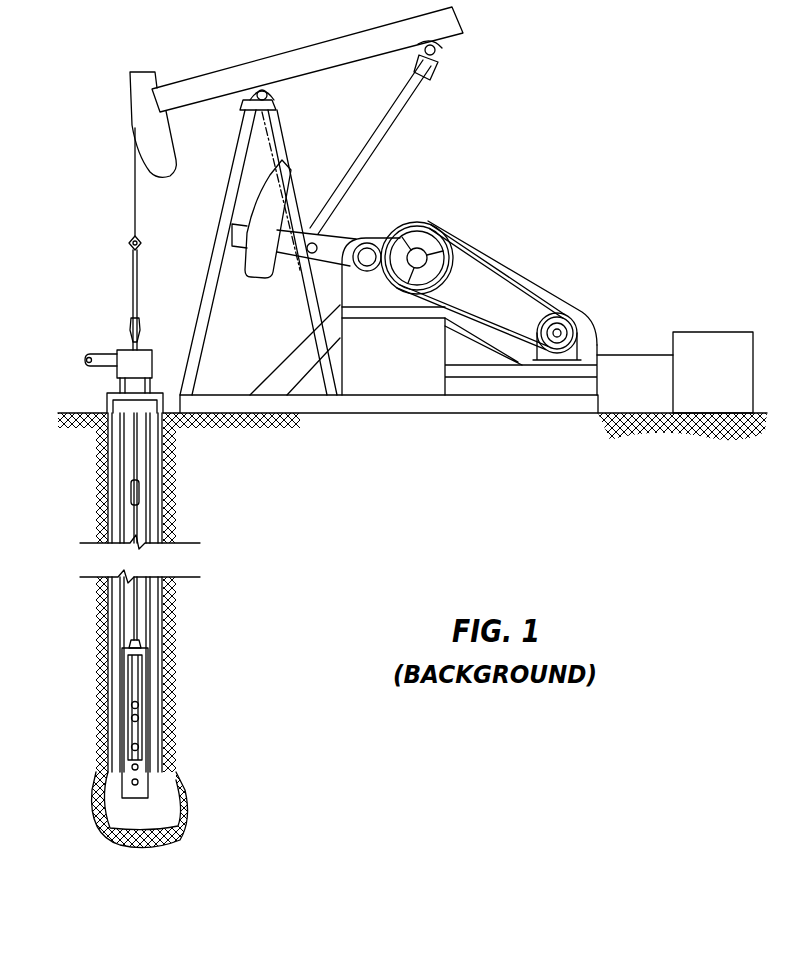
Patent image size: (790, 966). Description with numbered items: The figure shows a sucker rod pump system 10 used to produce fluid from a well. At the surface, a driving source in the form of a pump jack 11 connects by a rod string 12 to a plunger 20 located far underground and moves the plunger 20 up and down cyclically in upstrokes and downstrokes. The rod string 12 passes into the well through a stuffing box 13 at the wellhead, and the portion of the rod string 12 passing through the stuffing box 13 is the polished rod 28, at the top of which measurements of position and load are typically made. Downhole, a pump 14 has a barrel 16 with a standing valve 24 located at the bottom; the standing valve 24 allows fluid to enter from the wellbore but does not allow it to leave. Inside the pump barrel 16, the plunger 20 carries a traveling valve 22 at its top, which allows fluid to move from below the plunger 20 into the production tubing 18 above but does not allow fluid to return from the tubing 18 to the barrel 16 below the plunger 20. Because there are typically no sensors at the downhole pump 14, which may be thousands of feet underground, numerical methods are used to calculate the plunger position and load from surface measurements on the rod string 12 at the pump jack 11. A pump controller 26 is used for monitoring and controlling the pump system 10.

The sucker rod pump system 10 is at (490, 157).
The pump jack 11 is at (163, 117).
The rod string 12 is at (132, 286).
The stuffing box 13 is at (120, 350).
The downhole pump 14 is at (128, 640).
The barrel 16 is at (148, 684).
The production tubing 18 is at (120, 513).
The plunger 20 is at (132, 703).
The traveling valve 22 is at (131, 726).
The standing valve 24 is at (131, 752).
The pump controller 26 is at (727, 383).
The polished rod 28 is at (137, 447).